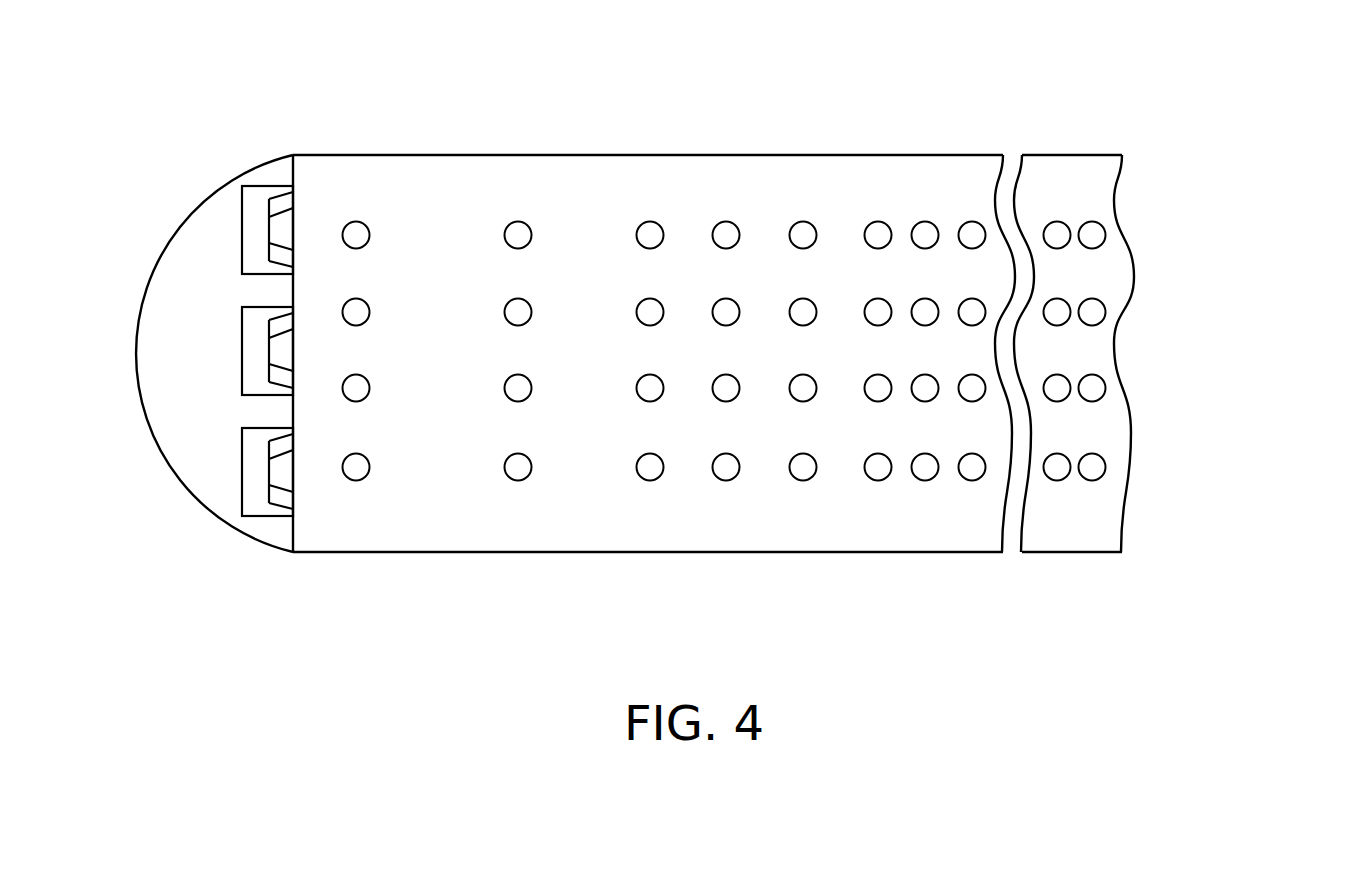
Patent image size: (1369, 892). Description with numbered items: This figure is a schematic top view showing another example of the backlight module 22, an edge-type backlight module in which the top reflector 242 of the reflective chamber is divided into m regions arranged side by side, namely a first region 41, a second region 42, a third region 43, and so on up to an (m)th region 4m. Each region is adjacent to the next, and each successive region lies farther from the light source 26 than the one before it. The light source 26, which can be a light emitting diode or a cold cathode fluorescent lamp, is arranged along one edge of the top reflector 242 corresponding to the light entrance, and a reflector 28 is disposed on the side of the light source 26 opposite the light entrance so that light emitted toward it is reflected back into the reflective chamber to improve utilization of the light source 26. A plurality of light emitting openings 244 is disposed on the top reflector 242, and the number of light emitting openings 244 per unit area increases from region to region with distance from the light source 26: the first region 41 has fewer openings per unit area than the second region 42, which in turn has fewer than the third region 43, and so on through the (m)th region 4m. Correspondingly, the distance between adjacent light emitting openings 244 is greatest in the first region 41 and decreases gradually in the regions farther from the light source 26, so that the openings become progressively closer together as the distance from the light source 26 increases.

The backlight module 22 is at (703, 361).
The light source 26 is at (257, 233).
The reflector 28 is at (152, 285).
The 1st region 41 is at (451, 361).
The 2nd region 42 is at (826, 90).
The 3rd region 43 is at (990, 90).
The (m)th region 4m is at (1117, 90).
The top reflector 242 is at (1074, 307).
The light emitting opening 244 is at (518, 465).